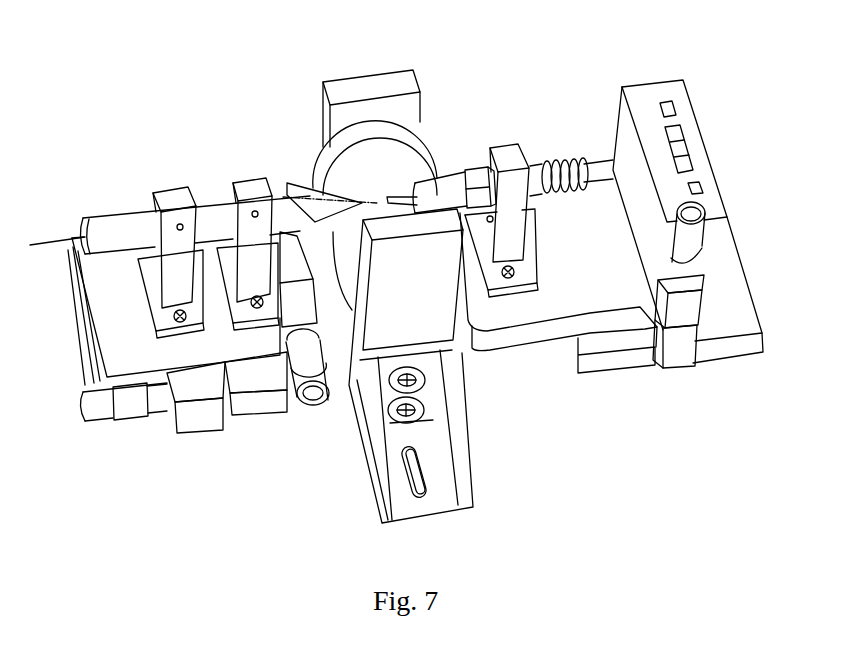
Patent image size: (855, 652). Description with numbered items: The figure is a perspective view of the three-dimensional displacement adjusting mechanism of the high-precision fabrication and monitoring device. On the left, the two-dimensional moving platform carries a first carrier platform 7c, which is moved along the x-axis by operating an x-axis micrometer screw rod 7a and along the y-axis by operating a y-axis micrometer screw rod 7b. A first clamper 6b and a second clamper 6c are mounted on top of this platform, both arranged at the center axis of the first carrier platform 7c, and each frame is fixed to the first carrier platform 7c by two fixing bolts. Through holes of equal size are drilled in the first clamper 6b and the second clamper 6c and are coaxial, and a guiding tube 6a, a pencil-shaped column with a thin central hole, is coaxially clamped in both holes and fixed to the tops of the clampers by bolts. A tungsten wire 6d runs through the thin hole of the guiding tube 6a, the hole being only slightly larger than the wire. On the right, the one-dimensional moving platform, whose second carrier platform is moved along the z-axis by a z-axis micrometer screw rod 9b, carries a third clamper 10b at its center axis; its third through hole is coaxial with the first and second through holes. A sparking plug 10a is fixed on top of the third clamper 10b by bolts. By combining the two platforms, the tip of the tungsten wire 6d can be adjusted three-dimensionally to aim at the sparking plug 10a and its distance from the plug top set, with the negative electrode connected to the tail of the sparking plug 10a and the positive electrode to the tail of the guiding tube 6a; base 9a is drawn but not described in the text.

The guiding tube 6a is at (95, 236).
The first clamper 6b is at (173, 288).
The second clamper 6c is at (252, 263).
The tungsten wire 6d is at (370, 200).
The x-axis micrometer screw rod 7a is at (103, 407).
The y-axis micrometer screw rod 7b is at (282, 415).
The first carrier platform 7c is at (188, 355).
The base plate 9a is at (560, 300).
The z-axis micrometer screw rod 9b is at (683, 232).
The sparking plug 10a is at (441, 168).
The third clamper 10b is at (515, 190).